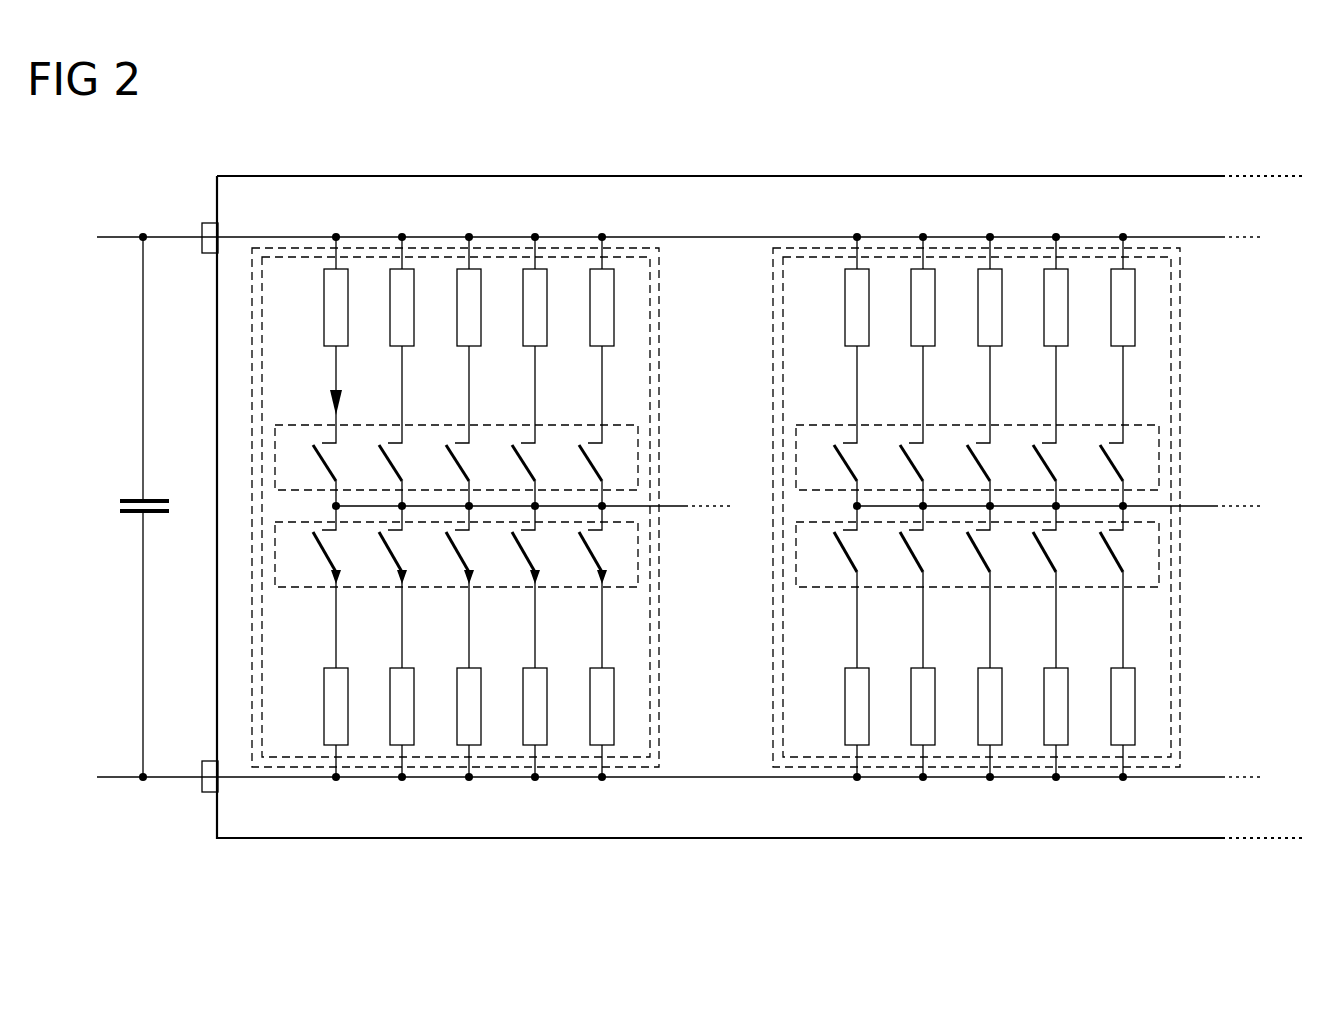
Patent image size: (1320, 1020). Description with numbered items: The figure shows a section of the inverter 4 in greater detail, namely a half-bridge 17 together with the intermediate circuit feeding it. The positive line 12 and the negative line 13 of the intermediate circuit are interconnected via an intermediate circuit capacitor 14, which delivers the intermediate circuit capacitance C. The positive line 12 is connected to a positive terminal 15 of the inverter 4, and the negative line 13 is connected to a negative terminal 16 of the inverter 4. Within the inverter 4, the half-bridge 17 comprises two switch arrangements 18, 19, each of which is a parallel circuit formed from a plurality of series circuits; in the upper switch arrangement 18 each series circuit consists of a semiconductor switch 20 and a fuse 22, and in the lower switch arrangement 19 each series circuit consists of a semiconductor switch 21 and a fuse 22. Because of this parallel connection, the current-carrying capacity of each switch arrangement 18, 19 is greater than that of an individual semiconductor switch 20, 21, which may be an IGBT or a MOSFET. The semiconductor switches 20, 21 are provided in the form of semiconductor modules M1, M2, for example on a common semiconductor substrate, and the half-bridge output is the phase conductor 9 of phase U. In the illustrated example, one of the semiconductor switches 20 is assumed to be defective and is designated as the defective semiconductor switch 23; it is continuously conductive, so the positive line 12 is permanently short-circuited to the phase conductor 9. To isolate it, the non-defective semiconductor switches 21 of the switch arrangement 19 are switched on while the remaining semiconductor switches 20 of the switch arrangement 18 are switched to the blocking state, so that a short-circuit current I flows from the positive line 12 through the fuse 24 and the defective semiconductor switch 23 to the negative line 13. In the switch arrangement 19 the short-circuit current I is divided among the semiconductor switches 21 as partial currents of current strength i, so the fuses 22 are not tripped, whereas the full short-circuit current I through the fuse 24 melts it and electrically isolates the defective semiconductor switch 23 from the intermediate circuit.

The inverter 4 is at (380, 176).
The phase conductor 9 is at (677, 507).
The positive line 12 is at (117, 237).
The negative line 13 is at (118, 778).
The intermediate circuit capacitor 14 is at (130, 501).
The positive terminal 15 is at (205, 224).
The negative terminal 16 is at (205, 793).
The half-bridge 17 is at (660, 330).
The switch arrangement 18 is at (650, 370).
The switch arrangement 19 is at (650, 648).
The semiconductor switch 20 is at (696, 426).
The semiconductor switch 21 is at (706, 587).
The fuse 22 is at (390, 312).
The defective semiconductor switch 23 is at (306, 461).
The fuse 24 is at (323, 307).
The semiconductor module M1 is at (627, 425).
The semiconductor module M2 is at (1148, 425).
The intermediate circuit capacitance C is at (109, 505).
The phase U is at (677, 506).
The short-circuit current I is at (330, 403).
The current strength of partial current i is at (479, 573).